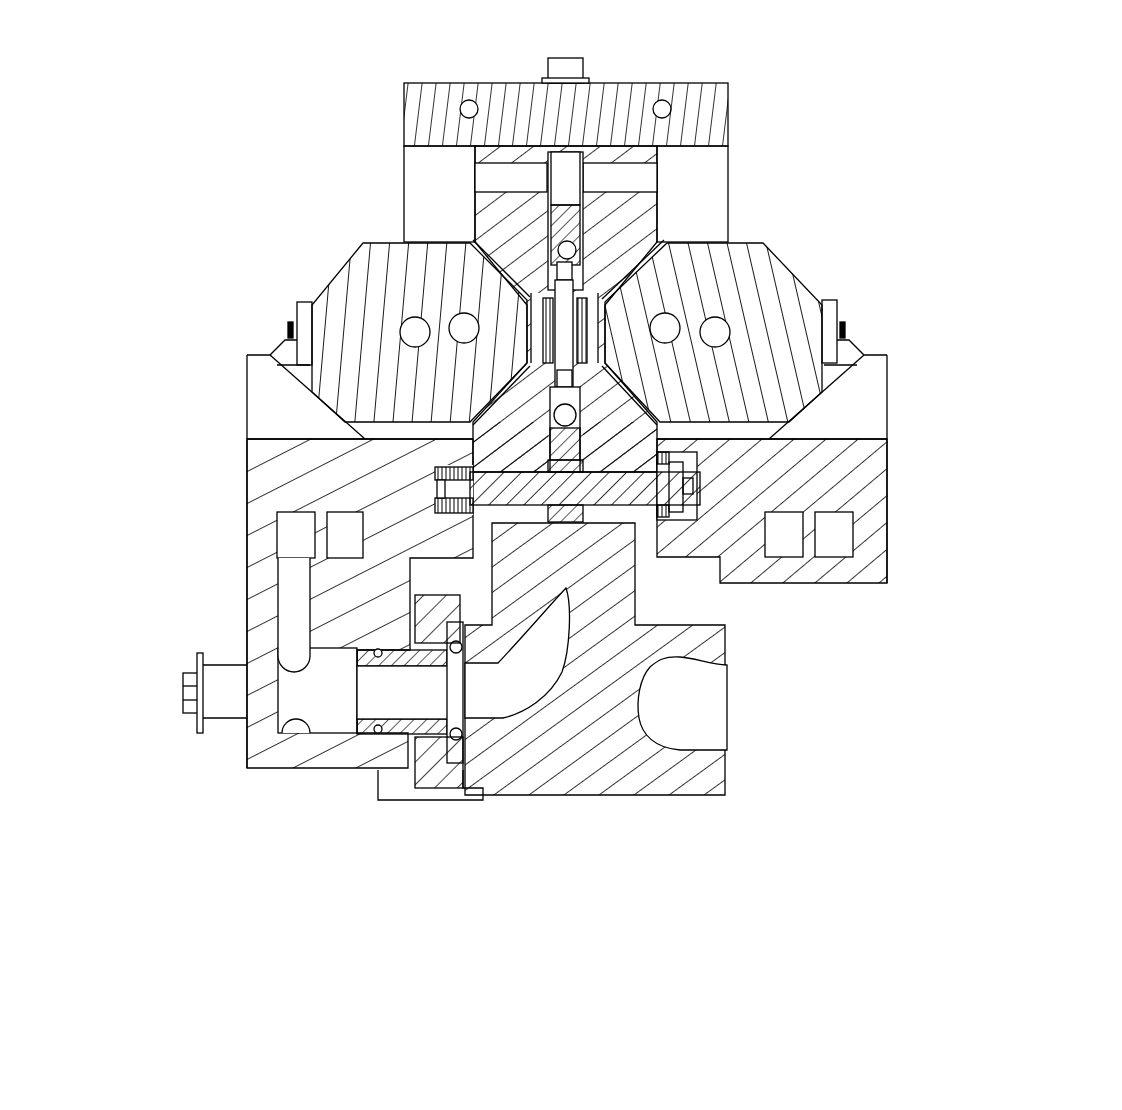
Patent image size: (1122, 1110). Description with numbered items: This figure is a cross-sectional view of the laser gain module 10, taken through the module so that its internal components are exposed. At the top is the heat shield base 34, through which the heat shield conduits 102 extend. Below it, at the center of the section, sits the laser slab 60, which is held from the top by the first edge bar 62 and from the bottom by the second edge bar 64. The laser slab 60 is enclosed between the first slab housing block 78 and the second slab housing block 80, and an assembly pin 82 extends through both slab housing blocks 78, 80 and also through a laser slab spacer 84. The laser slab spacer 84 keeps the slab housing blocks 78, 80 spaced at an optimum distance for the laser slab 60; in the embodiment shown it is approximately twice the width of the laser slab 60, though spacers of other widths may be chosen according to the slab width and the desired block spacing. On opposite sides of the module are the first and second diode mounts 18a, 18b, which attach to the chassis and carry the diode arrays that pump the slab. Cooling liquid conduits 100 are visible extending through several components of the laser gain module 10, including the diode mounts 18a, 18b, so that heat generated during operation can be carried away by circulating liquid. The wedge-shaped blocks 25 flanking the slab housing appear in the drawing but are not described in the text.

The laser gain module 10 is at (860, 128).
The first diode mount 18a is at (265, 770).
The second diode mount 18b is at (873, 573).
The wedge blocks 25 is at (540, 310).
The heat shield base 34 is at (720, 88).
The laser slab 60 is at (540, 328).
The first edge bar 62 is at (582, 212).
The second edge bar 64 is at (586, 420).
The first slab housing block 78 is at (497, 442).
The second slab housing block 80 is at (600, 435).
The assembly pin 82 is at (615, 522).
The laser slab spacer 84 is at (567, 522).
The cooling liquid conduits 100 is at (717, 330).
The heat shield conduits 102 is at (464, 100).